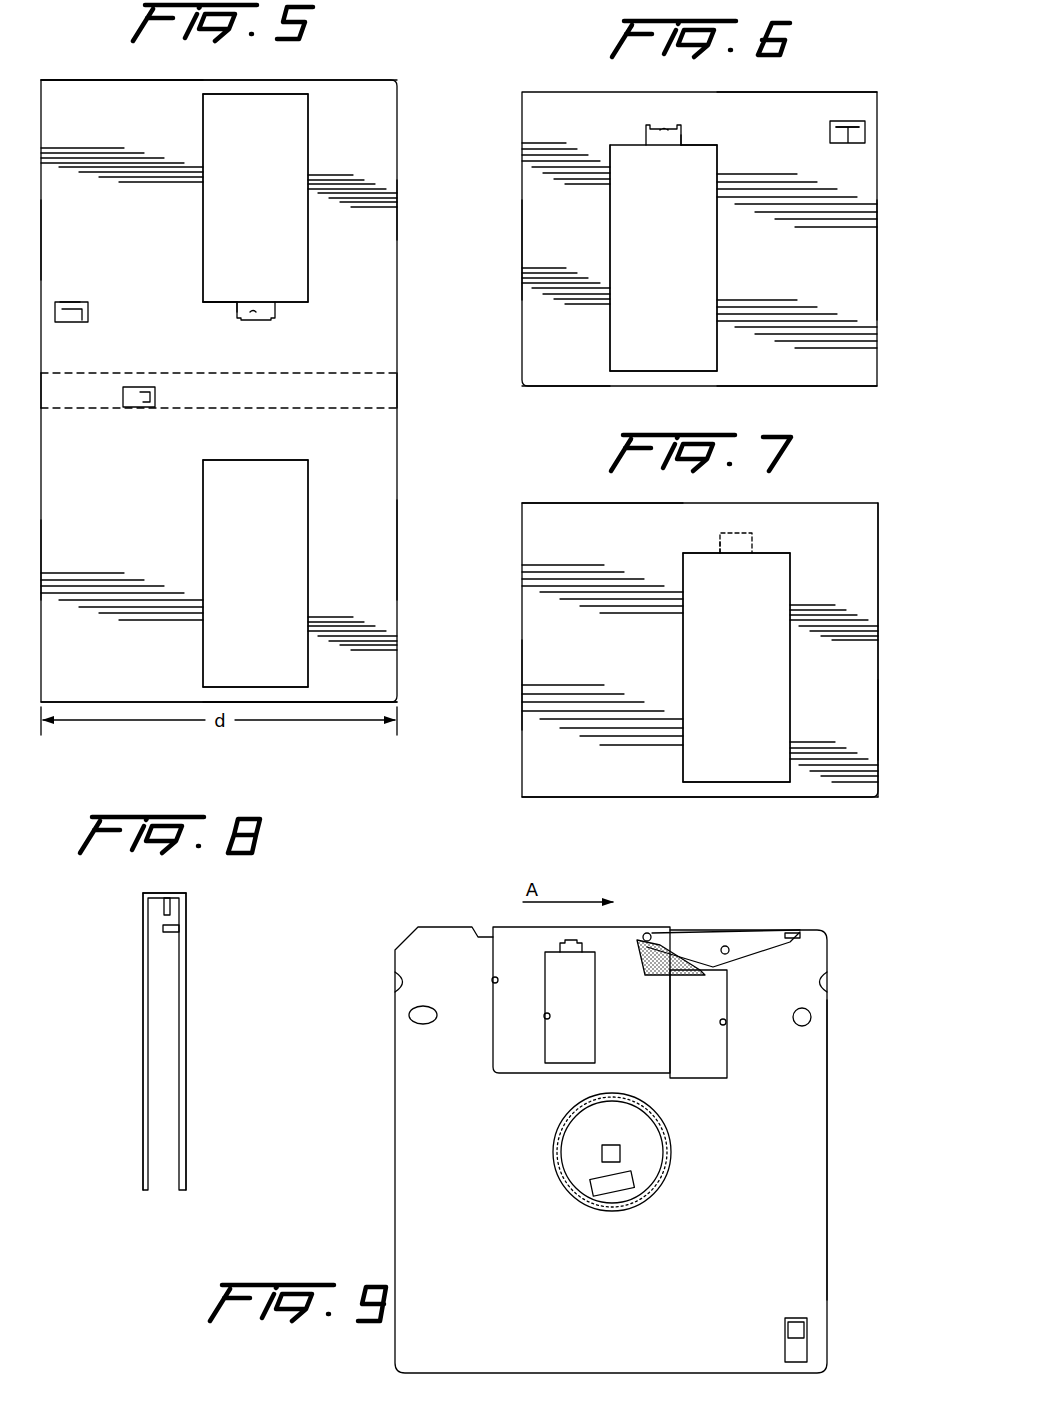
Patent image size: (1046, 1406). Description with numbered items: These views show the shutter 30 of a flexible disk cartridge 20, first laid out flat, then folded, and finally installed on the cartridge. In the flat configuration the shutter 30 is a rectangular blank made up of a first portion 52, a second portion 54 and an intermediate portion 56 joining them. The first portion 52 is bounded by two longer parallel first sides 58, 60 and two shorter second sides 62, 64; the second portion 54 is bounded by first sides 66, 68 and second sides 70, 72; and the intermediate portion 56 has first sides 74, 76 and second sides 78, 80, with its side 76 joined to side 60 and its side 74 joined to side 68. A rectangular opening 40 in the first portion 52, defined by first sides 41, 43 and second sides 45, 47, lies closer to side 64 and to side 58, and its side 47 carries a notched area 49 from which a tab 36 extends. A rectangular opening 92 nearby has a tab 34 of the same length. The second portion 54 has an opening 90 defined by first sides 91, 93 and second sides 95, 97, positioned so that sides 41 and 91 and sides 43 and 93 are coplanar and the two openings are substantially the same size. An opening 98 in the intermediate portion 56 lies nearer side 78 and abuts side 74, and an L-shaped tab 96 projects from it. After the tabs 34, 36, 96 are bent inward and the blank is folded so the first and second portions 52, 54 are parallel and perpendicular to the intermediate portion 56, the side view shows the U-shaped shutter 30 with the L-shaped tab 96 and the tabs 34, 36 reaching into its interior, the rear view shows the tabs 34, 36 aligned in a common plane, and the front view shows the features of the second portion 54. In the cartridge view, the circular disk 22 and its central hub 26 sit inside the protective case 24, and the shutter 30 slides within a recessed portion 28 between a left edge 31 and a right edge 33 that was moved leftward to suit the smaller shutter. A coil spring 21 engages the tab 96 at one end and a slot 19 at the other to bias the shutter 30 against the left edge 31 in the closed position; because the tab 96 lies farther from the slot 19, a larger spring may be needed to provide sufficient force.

In FIG. 9, the slot 19 is at (793, 932).
In FIG. 9, the flexible disk cartridge 20 is at (832, 1250).
In FIG. 9, the coil spring 21 is at (702, 945).
In FIG. 9, the circular disk 22 is at (657, 978).
In FIG. 9, the protective case 24 is at (800, 1188).
In FIG. 9, the hub 26 is at (643, 1182).
In FIG. 9, the recessed portion 28 is at (713, 1063).
In FIG. 5, the shutter 30 is at (399, 257).
In FIG. 6, the shutter 30 is at (832, 89).
In FIG. 7, the shutter 30 is at (851, 501).
In FIG. 8, the shutter 30 is at (192, 1012).
In FIG. 9, the shutter 30 is at (672, 1047).
In FIG. 9, the left edge 31 is at (492, 980).
In FIG. 9, the right edge 33 is at (725, 1020).
In FIG. 5, the tab 34 is at (88, 313).
In FIG. 6, the tab 34 is at (851, 144).
In FIG. 5, the tab 36 is at (252, 320).
In FIG. 6, the tab 36 is at (667, 125).
In FIG. 7, the tab 36 is at (743, 530).
In FIG. 8, the tab 36 is at (173, 942).
In FIG. 9, the tab 36 is at (572, 940).
In FIG. 5, the opening 40 is at (295, 110).
In FIG. 6, the opening 40 is at (696, 223).
In FIG. 9, the opening 40 is at (545, 1017).
In FIG. 5, the first side 41 is at (204, 203).
In FIG. 6, the first side 41 is at (716, 271).
In FIG. 5, the first side 43 is at (307, 207).
In FIG. 6, the first side 43 is at (611, 271).
In FIG. 5, the second side 45 is at (248, 95).
In FIG. 6, the second side 45 is at (656, 370).
In FIG. 5, the second side 47 is at (218, 300).
In FIG. 6, the second side 47 is at (692, 146).
In FIG. 5, the notched area 49 is at (247, 302).
In FIG. 6, the notched area 49 is at (681, 135).
In FIG. 7, the notched area 49 is at (720, 538).
In FIG. 5, the first portion 52 is at (185, 97).
In FIG. 6, the first portion 52 is at (570, 360).
In FIG. 8, the first portion 52 is at (187, 1103).
In FIG. 5, the second portion 54 is at (363, 673).
In FIG. 7, the second portion 54 is at (863, 572).
In FIG. 8, the second portion 54 is at (142, 1113).
In FIG. 5, the intermediate portion 56 is at (373, 390).
In FIG. 8, the intermediate portion 56 is at (168, 896).
In FIG. 5, the first side 58 is at (128, 80).
In FIG. 6, the first side 58 is at (809, 385).
In FIG. 5, the first side 60 is at (278, 360).
In FIG. 6, the first side 60 is at (779, 94).
In FIG. 5, the second side 62 is at (42, 242).
In FIG. 6, the second side 62 is at (876, 266).
In FIG. 5, the second side 64 is at (396, 212).
In FIG. 6, the second side 64 is at (523, 261).
In FIG. 5, the first side 66 is at (83, 701).
In FIG. 7, the first side 66 is at (585, 796).
In FIG. 5, the first side 68 is at (88, 410).
In FIG. 7, the first side 68 is at (602, 504).
In FIG. 5, the second side 70 is at (42, 560).
In FIG. 7, the second side 70 is at (523, 687).
In FIG. 5, the second side 72 is at (396, 545).
In FIG. 7, the second side 72 is at (877, 715).
In FIG. 5, the first side 74 is at (183, 393).
In FIG. 5, the first side 76 is at (145, 377).
In FIG. 5, the second side 78 is at (42, 392).
In FIG. 5, the second side 80 is at (390, 397).
In FIG. 5, the opening 90 is at (275, 623).
In FIG. 7, the opening 90 is at (703, 668).
In FIG. 5, the first side 91 is at (204, 558).
In FIG. 7, the first side 91 is at (684, 643).
In FIG. 5, the rectangular opening 92 is at (73, 302).
In FIG. 6, the rectangular opening 92 is at (836, 136).
In FIG. 5, the first side 93 is at (307, 567).
In FIG. 7, the first side 93 is at (789, 665).
In FIG. 5, the second side 95 is at (260, 462).
In FIG. 7, the second side 95 is at (770, 555).
In FIG. 5, the L-shaped tab 96 is at (143, 407).
In FIG. 8, the L-shaped tab 96 is at (163, 907).
In FIG. 9, the L-shaped tab 96 is at (650, 933).
In FIG. 5, the second side 97 is at (252, 686).
In FIG. 7, the second side 97 is at (727, 781).
In FIG. 5, the opening 98 is at (130, 407).